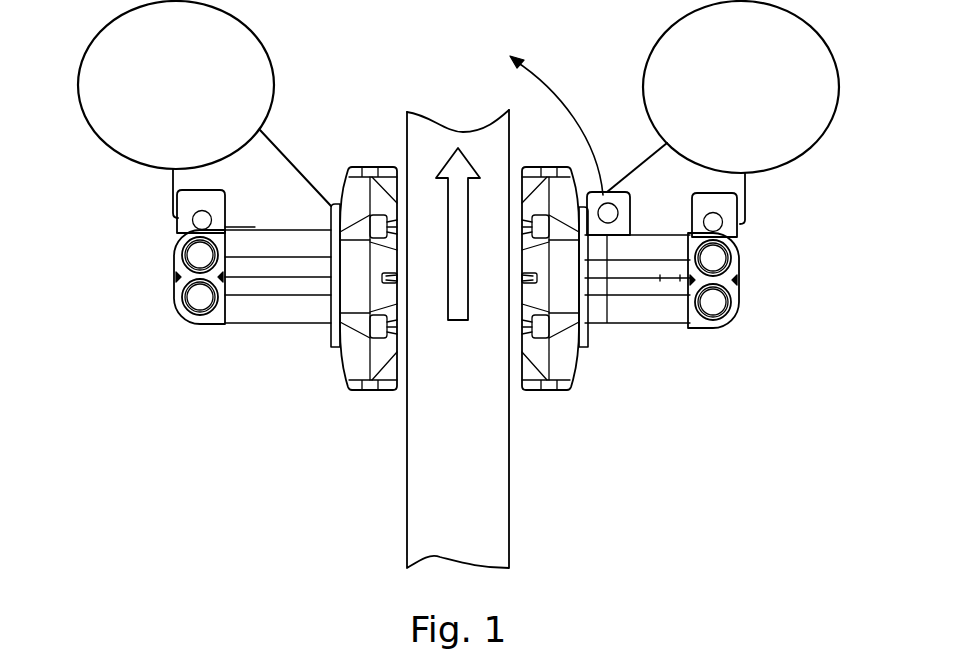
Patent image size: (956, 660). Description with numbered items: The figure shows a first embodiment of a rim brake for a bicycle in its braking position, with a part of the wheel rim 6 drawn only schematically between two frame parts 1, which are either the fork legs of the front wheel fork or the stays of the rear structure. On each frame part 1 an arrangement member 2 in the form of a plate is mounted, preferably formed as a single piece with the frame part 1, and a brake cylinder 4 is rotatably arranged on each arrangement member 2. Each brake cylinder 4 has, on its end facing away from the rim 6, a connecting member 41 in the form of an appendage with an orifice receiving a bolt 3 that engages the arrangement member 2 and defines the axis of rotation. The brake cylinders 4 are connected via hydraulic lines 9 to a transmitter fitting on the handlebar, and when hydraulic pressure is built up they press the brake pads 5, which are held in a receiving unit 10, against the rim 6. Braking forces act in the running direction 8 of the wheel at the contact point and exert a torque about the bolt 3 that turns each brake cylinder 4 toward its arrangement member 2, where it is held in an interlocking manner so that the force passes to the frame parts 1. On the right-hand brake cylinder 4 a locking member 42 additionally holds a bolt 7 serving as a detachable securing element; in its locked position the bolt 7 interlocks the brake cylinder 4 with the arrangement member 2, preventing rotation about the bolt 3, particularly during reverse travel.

The frame part 1 is at (106, 40).
The arrangement member 2 is at (288, 163).
The bolt 3 is at (205, 220).
The brake cylinder 4 is at (277, 290).
The brake pad 5 is at (352, 360).
The wheel rim 6 is at (497, 473).
The bolt 7 is at (549, 117).
The running direction 8 is at (458, 320).
The hydraulic line 9 is at (196, 256).
The receiving unit 10 is at (331, 335).
The connecting member 41 is at (181, 200).
The locking member 42 is at (630, 203).